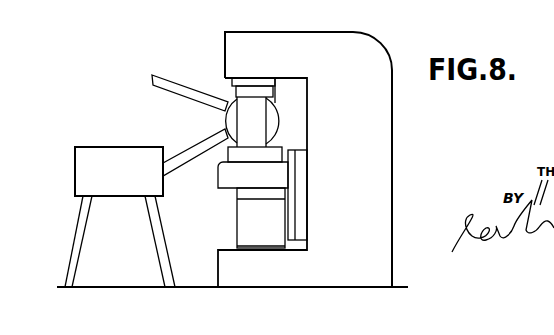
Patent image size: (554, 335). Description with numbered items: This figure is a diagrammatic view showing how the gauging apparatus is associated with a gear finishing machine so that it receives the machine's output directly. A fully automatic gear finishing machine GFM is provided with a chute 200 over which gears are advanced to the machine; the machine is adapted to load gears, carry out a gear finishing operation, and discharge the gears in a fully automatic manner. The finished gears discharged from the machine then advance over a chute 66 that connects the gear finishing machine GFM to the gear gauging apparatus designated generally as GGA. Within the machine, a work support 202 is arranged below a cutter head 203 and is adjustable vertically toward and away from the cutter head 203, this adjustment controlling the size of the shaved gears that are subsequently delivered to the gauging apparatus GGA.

The gear finishing machine GFM is at (378, 32).
The gear gauging apparatus GGA is at (76, 173).
The chute 200 is at (179, 83).
The chute 66 is at (195, 144).
The work support 202 is at (220, 178).
The cutter head 203 is at (273, 92).